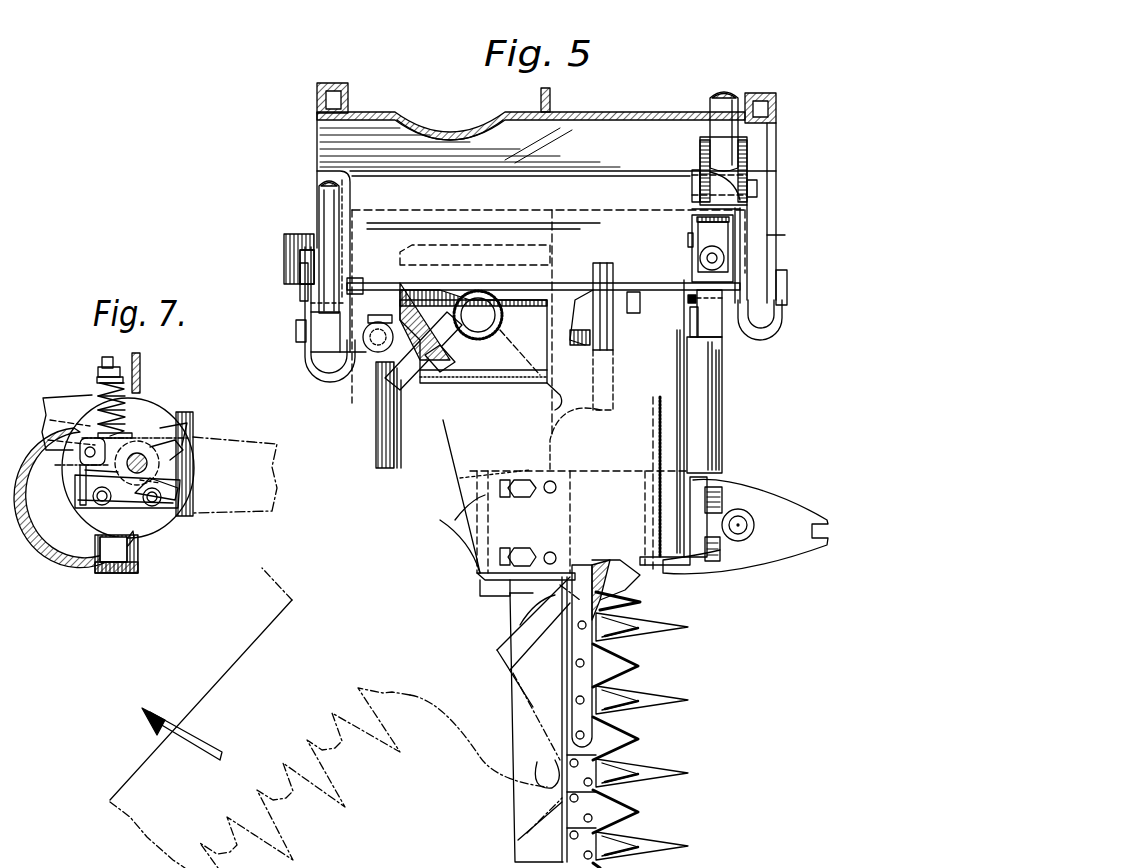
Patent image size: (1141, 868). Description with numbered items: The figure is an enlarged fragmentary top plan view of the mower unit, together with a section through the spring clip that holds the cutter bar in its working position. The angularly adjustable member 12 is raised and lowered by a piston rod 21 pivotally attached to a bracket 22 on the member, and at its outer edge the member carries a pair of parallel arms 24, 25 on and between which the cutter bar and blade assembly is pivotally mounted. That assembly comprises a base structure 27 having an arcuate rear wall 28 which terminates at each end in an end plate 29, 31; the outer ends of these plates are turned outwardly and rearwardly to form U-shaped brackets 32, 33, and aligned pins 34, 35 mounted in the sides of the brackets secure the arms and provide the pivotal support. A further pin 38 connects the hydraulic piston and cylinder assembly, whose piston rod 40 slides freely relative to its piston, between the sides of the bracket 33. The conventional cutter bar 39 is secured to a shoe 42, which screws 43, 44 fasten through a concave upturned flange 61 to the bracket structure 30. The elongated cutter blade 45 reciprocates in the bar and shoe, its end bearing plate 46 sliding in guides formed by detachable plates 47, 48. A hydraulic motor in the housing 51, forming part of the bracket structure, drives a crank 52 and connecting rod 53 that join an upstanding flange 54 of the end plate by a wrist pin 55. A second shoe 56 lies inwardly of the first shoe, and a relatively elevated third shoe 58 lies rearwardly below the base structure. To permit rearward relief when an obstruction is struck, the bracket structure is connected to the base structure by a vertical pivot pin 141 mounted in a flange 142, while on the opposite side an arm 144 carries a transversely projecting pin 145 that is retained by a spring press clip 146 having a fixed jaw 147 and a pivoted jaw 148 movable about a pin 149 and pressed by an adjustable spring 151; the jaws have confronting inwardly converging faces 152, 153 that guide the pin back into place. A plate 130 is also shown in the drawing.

In FIG. 5, the member 12 is at (372, 110).
In FIG. 5, the piston rod 21 is at (722, 103).
In FIG. 5, the bracket 22 is at (750, 156).
In FIG. 5, the arm 24 is at (771, 240).
In FIG. 7, the arm 24 is at (55, 450).
In FIG. 5, the arm 25 is at (320, 205).
In FIG. 5, the base structure 27 is at (408, 225).
In FIG. 7, the base structure 27 is at (130, 358).
In FIG. 5, the arcuate rear wall 28 is at (445, 213).
In FIG. 7, the arcuate rear wall 28 is at (88, 524).
In FIG. 5, the end plate 29 is at (742, 230).
In FIG. 5, the bracket structure 30 is at (523, 422).
In FIG. 5, the end plate 31 is at (347, 245).
In FIG. 5, the U-shaped bracket 32 is at (780, 325).
In FIG. 7, the U-shaped bracket 32 is at (180, 500).
In FIG. 5, the U-shaped bracket 33 is at (306, 312).
In FIG. 5, the pin 34 is at (789, 288).
In FIG. 5, the pin 35 is at (300, 291).
In FIG. 5, the pin 38 is at (296, 335).
In FIG. 5, the cutter bar 39 is at (520, 714).
In FIG. 5, the piston rod 40 is at (328, 186).
In FIG. 5, the shoe 42 is at (770, 546).
In FIG. 5, the screw 43 is at (705, 545).
In FIG. 5, the screw 44 is at (480, 490).
In FIG. 5, the cutter blade 45 is at (625, 734).
In FIG. 5, the end bearing plate 46 is at (615, 580).
In FIG. 5, the detachable plate 47 is at (510, 591).
In FIG. 5, the detachable plate 48 is at (692, 569).
In FIG. 5, the housing 51 is at (532, 332).
In FIG. 5, the crank 52 is at (628, 293).
In FIG. 5, the connecting rod 53 is at (612, 470).
In FIG. 5, the upstanding flange 54 is at (570, 600).
In FIG. 5, the wrist pin 55 is at (540, 536).
In FIG. 5, the second shoe 56 is at (710, 428).
In FIG. 5, the third shoe 58 is at (286, 249).
In FIG. 7, the third shoe 58 is at (104, 575).
In FIG. 5, the upturned flange 61 is at (720, 563).
In FIG. 5, the plate 130 is at (465, 477).
In FIG. 5, the vertical pivot pin 141 is at (362, 345).
In FIG. 5, the flange 142 is at (372, 372).
In FIG. 5, the arm 144 is at (682, 393).
In FIG. 7, the arm 144 is at (200, 515).
In FIG. 5, the pin 145 is at (690, 305).
In FIG. 7, the pin 145 is at (140, 458).
In FIG. 7, the spring press clip 146 is at (164, 463).
In FIG. 7, the fixed jaw 147 is at (170, 512).
In FIG. 5, the pivoted jaw 148 is at (722, 325).
In FIG. 7, the pivoted jaw 148 is at (165, 440).
In FIG. 7, the pin 149 is at (88, 444).
In FIG. 5, the adjustable spring 151 is at (700, 252).
In FIG. 7, the adjustable spring 151 is at (122, 403).
In FIG. 7, the converging face 152 is at (172, 486).
In FIG. 7, the converging face 153 is at (177, 440).